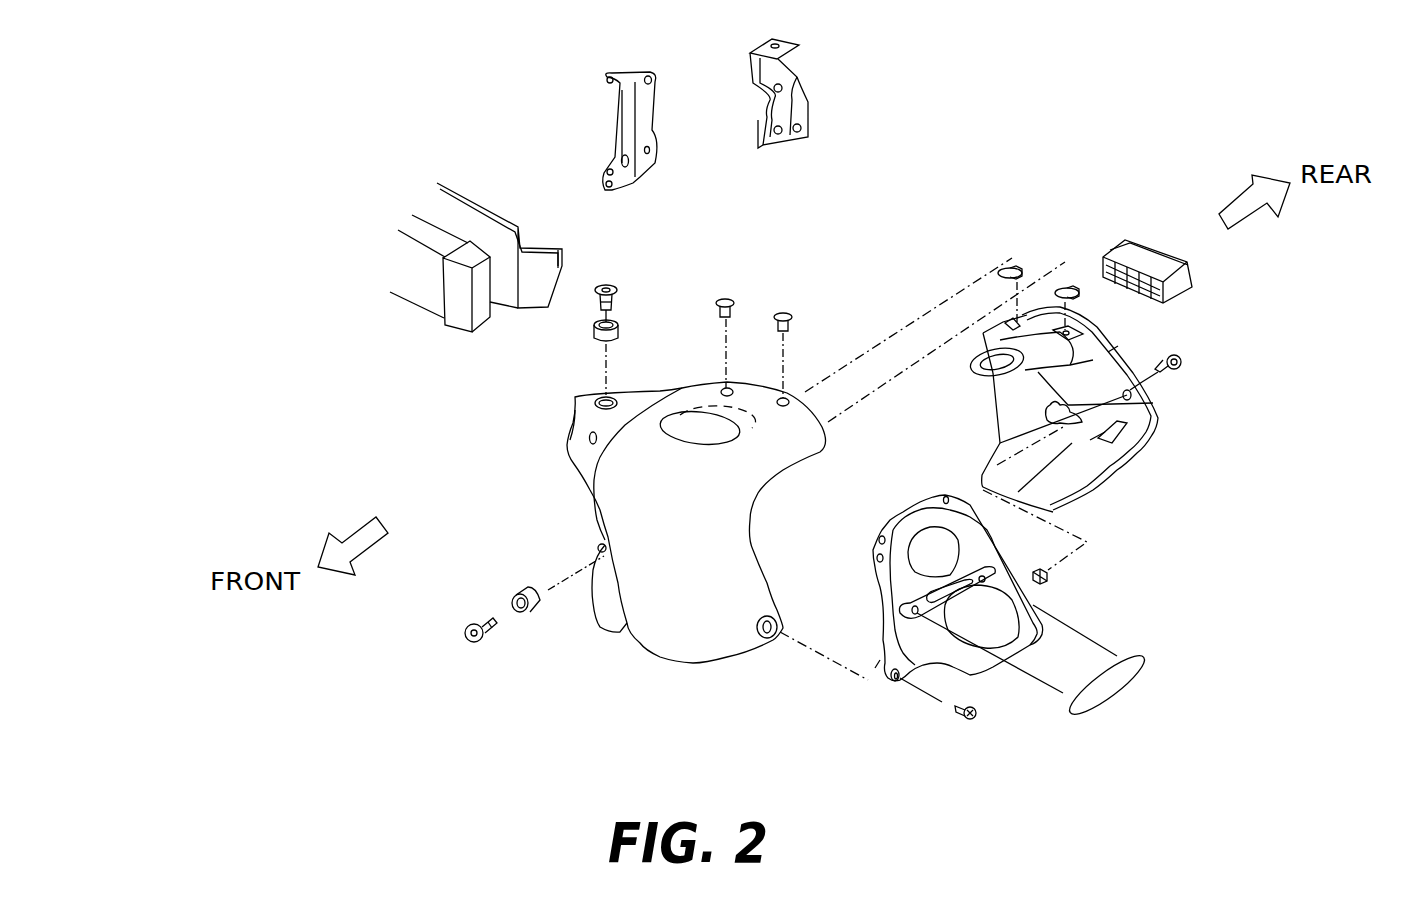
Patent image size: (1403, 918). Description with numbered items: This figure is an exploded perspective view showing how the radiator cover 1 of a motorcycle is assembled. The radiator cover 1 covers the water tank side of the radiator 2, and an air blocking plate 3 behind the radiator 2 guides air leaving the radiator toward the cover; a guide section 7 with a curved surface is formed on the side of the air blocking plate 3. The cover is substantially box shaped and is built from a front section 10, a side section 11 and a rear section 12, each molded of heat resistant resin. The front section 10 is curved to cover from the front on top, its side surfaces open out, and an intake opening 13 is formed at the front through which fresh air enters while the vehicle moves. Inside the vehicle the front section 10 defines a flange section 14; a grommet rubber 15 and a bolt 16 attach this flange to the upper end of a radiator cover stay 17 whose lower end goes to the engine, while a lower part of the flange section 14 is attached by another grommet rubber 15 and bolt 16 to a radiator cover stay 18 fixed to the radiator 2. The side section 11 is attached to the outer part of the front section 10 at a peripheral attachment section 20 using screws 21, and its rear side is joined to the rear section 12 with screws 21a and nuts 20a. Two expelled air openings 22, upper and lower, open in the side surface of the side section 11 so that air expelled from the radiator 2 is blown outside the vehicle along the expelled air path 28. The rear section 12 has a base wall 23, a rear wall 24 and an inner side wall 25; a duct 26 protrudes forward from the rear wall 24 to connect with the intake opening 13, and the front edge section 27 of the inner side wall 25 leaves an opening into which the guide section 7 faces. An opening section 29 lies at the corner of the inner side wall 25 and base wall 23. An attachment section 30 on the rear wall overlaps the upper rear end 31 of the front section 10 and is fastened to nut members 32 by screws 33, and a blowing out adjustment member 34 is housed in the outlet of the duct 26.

The radiator cover 1 is at (550, 541).
The radiator 2 is at (420, 293).
The air blocking plate 3 is at (457, 214).
The guide section 7 is at (553, 265).
The front section 10 is at (607, 495).
The side section 11 is at (1037, 603).
The rear section 12 is at (1170, 405).
The intake opening 13 is at (700, 420).
The flange section 14 is at (580, 420).
The grommet rubber 15 is at (597, 328).
The bolt 16 is at (618, 297).
The radiator cover stay 17 is at (810, 102).
The radiator cover stay 18 is at (620, 115).
The peripheral attachment section 20 is at (943, 493).
The nut 20a is at (1050, 577).
The screw 21 is at (960, 723).
The screw 21a is at (1185, 362).
The expelled air opening 22 is at (917, 563).
The base wall 23 is at (1100, 448).
The rear wall 24 is at (1113, 350).
The inner side wall 25 is at (1007, 393).
The duct 26 is at (975, 353).
The front edge section 27 is at (1000, 408).
The expelled air path 28 is at (882, 482).
The opening section 29 is at (1098, 448).
The attachment section 30 is at (1068, 326).
The upper rear end 31 is at (755, 393).
The nut member 32 is at (1070, 290).
The screw 33 is at (730, 297).
The blowing out adjustment member 34 is at (1141, 264).